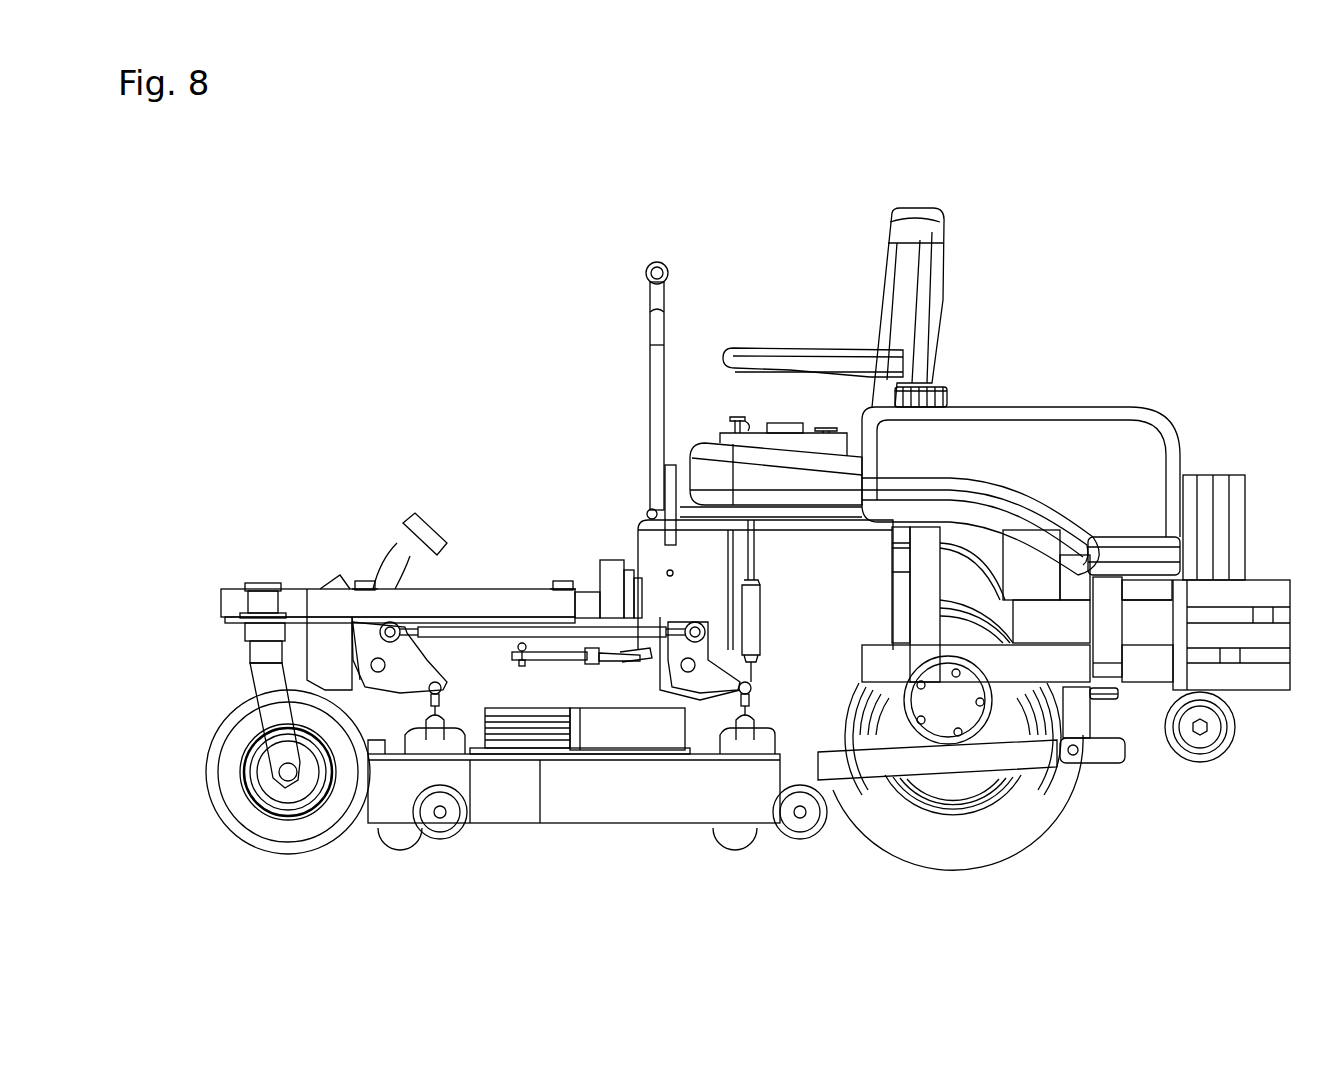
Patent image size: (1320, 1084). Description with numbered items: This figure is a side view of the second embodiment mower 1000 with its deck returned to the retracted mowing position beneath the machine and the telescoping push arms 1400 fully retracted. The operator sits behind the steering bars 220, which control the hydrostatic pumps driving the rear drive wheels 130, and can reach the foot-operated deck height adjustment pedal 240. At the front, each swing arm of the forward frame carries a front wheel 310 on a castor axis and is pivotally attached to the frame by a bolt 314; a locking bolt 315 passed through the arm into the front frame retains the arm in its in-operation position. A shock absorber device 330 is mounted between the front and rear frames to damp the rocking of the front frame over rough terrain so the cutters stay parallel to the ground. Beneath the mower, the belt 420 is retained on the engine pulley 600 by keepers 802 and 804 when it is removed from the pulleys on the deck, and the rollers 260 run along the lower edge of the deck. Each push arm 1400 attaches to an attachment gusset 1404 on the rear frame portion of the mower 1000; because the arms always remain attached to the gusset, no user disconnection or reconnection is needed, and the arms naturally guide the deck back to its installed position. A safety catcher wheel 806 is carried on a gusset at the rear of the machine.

The second embodiment mower 1000 is at (1002, 258).
The rear drive wheels 130 is at (965, 855).
The steering bars 220 is at (648, 272).
The foot-operated deck height adjustment pedal 240 is at (422, 525).
The anti-scalp roller 260 is at (445, 840).
The front wheel 310 is at (270, 852).
The pivot mount bolt 314 is at (561, 583).
The locking bolt 315 is at (366, 583).
The shock absorber device 330 is at (757, 625).
The belt 420 is at (625, 662).
The engine pulley 600 is at (1118, 699).
The keeper 802 is at (522, 663).
The keeper 804 is at (594, 665).
The safety catcher wheel 806 is at (1235, 746).
The telescoping push arm 1400 is at (852, 772).
The attachment gusset 1404 is at (1082, 755).